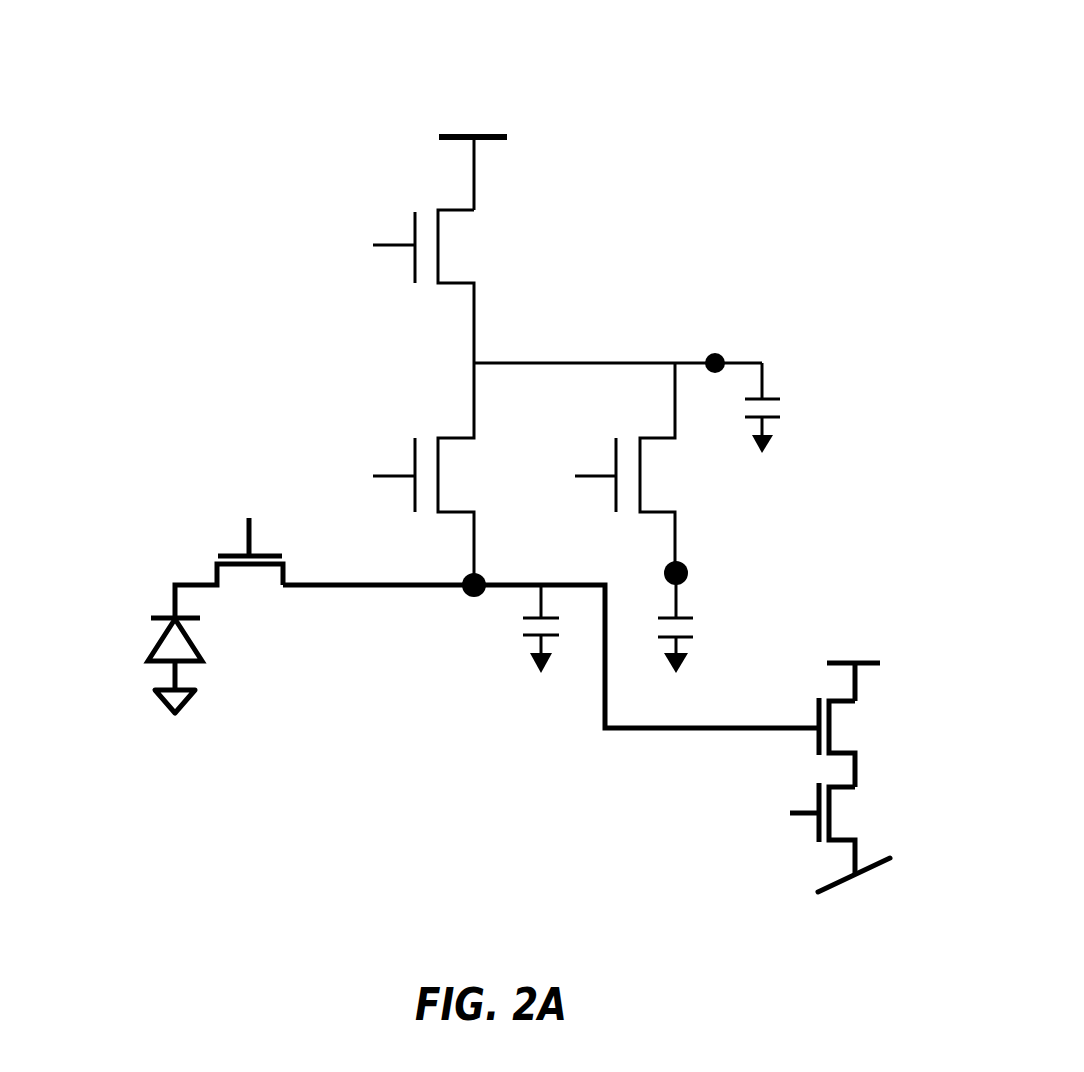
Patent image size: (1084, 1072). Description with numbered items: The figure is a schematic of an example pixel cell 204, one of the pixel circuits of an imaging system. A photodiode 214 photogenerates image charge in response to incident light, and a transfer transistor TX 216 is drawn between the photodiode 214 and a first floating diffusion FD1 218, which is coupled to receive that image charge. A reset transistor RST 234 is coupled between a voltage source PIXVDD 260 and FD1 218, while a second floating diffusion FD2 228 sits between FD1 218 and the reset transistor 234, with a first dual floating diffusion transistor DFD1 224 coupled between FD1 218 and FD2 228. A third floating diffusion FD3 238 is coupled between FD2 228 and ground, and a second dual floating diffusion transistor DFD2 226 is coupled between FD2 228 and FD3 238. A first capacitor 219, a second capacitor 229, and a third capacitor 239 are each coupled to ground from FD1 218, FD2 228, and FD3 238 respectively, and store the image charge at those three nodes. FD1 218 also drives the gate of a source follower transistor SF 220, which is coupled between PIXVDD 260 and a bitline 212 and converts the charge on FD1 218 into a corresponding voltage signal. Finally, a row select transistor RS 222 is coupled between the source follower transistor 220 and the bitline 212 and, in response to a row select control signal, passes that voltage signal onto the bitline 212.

The pixel cell 204 is at (250, 70).
The voltage source PIXVDD 260 is at (922, 651).
The reset transistor RST 234 is at (346, 286).
The first dual floating diffusion transistor DFD1 224 is at (347, 467).
The second dual floating diffusion transistor DFD2 226 is at (544, 467).
The second floating diffusion FD2 228 is at (791, 349).
The second capacitor 229 is at (784, 409).
The third floating diffusion FD3 238 is at (755, 576).
The third capacitor 239 is at (697, 629).
The first floating diffusion FD1 218 is at (425, 606).
The first capacitor 219 is at (523, 629).
The transfer transistor TX 216 is at (208, 521).
The photodiode 214 is at (97, 651).
The source follower transistor SF 220 is at (913, 729).
The row select transistor RS 222 is at (913, 819).
The bitline 212 is at (872, 936).